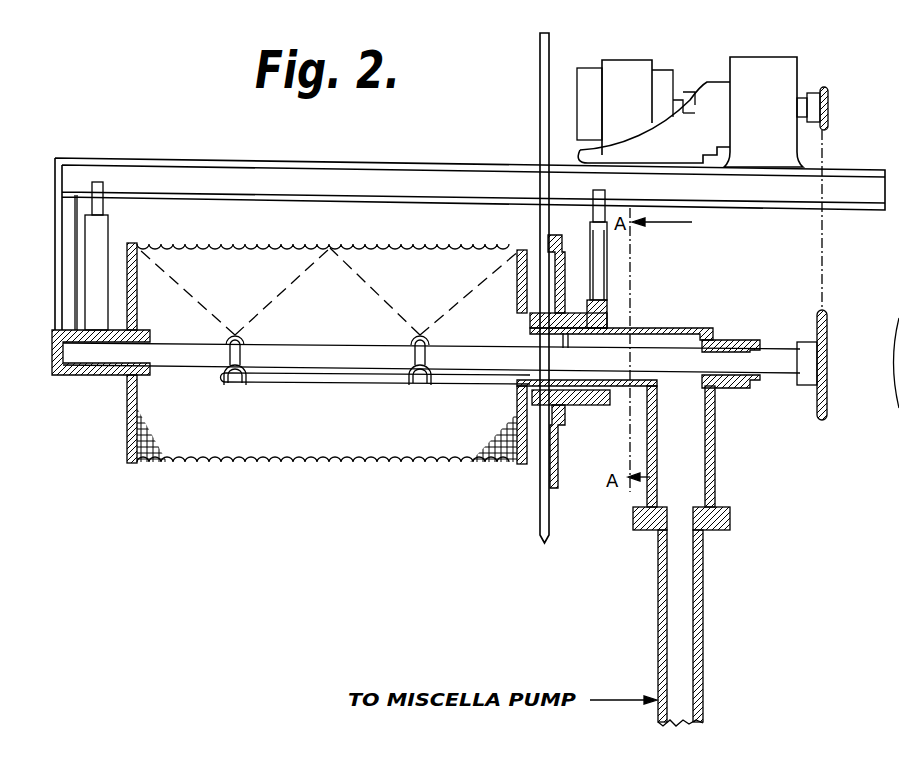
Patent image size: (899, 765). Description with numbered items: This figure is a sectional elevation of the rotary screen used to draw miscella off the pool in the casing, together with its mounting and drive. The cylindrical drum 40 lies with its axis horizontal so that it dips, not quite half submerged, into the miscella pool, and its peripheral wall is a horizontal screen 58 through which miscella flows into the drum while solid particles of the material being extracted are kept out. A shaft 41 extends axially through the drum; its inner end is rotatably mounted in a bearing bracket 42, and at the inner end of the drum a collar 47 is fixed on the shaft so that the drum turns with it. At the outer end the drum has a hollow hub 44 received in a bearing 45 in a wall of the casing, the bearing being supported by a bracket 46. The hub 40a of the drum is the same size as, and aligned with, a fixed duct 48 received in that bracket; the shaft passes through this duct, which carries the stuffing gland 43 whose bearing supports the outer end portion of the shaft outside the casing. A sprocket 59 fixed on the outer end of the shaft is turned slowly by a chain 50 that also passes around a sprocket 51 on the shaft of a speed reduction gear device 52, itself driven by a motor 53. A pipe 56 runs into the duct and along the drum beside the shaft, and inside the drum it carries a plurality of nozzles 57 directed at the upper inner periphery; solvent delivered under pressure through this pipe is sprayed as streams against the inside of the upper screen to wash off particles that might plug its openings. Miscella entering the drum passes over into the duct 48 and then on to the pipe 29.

The pipe 29 is at (677, 628).
The cylindrical drum 40 is at (128, 408).
The hub 40a is at (520, 400).
The shaft 41 is at (168, 351).
The bearing bracket 42 is at (80, 376).
The stuffing gland 43 is at (728, 340).
The hollow hub 44 is at (527, 338).
The bearing 45 is at (560, 292).
The bracket 46 is at (600, 276).
The collar 47 is at (143, 329).
The fixed duct 48 is at (673, 328).
The chain 50 is at (824, 272).
The sprocket 51 is at (830, 102).
The speed reduction gear device 52 is at (772, 109).
The motor 53 is at (638, 106).
The pipe 56 is at (312, 378).
The nozzles 57 is at (243, 339).
The screen 58 is at (442, 250).
The sprocket 59 is at (815, 400).